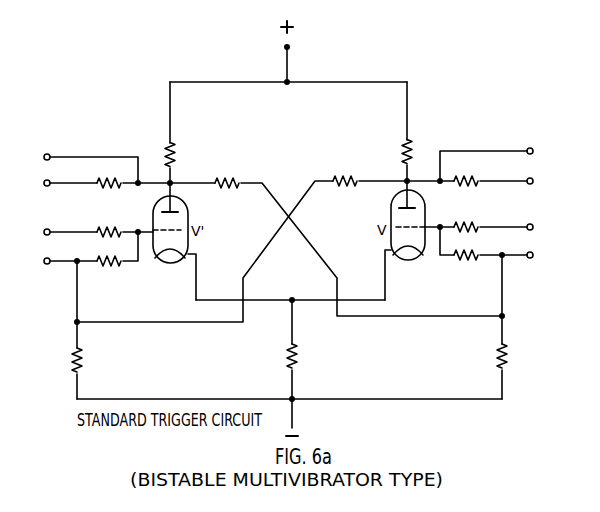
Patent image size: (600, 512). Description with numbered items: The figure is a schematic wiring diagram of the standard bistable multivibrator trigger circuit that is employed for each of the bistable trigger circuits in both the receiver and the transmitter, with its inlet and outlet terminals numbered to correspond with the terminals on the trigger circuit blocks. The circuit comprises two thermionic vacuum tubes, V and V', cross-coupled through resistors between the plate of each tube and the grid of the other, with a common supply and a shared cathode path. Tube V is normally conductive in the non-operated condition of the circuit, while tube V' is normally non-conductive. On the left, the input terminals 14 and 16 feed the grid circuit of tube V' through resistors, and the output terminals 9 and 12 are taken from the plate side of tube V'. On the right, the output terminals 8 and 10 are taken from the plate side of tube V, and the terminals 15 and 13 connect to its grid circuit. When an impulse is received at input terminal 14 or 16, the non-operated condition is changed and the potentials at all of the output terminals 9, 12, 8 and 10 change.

The output terminal 8 is at (492, 164).
The output terminal 9 is at (82, 166).
The output terminal 10 is at (496, 183).
The output terminal 12 is at (83, 185).
The terminal 13 is at (496, 271).
The input terminal 14 is at (82, 277).
The terminal 15 is at (488, 229).
The input terminal 16 is at (89, 234).